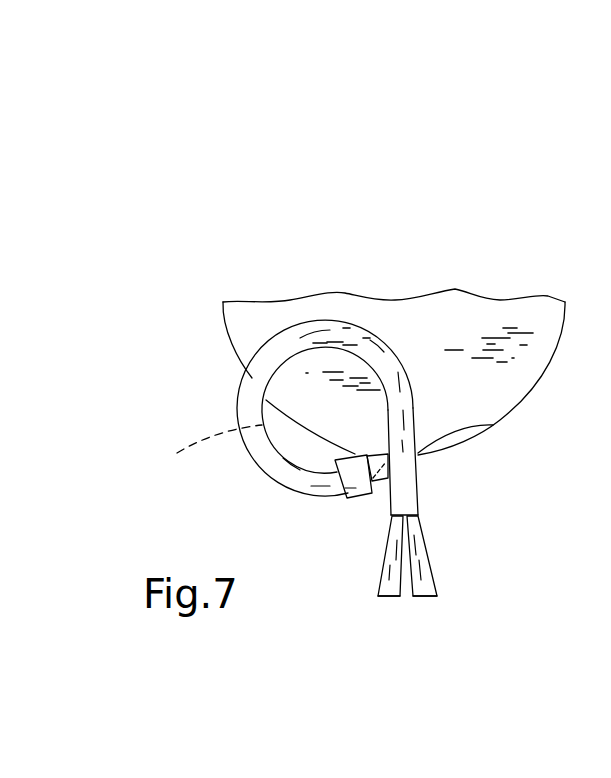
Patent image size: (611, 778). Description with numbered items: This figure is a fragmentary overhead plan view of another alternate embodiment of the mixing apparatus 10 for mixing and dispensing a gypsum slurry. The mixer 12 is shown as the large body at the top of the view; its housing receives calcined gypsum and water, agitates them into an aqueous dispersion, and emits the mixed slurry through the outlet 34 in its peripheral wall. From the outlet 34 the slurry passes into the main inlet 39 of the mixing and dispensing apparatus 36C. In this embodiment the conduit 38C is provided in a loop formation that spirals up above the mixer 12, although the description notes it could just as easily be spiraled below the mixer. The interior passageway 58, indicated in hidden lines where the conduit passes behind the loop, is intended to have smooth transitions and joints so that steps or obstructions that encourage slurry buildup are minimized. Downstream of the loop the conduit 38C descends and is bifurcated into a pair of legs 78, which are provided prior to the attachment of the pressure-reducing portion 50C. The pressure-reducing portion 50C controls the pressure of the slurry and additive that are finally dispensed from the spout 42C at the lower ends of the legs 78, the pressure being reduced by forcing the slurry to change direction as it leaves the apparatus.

The mixing apparatus 10 is at (350, 419).
The mixer 12 is at (560, 343).
The outlet 34 is at (493, 425).
The mixing and dispensing apparatus 36C is at (252, 436).
The conduit 38C is at (282, 467).
The main inlet 39 is at (380, 488).
The interior passageway 58 is at (202, 454).
The pressure-reducing portion 50C is at (424, 551).
The legs 78 is at (393, 558).
The spout 42C is at (392, 598).